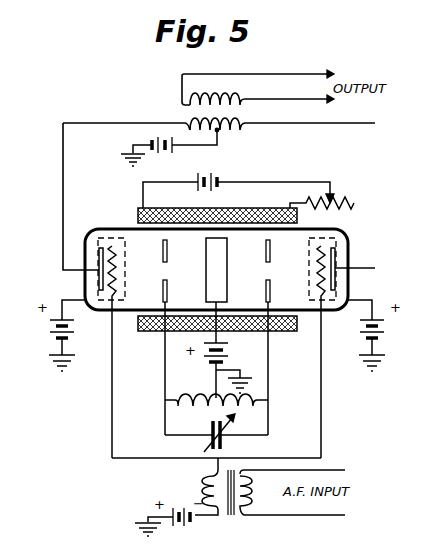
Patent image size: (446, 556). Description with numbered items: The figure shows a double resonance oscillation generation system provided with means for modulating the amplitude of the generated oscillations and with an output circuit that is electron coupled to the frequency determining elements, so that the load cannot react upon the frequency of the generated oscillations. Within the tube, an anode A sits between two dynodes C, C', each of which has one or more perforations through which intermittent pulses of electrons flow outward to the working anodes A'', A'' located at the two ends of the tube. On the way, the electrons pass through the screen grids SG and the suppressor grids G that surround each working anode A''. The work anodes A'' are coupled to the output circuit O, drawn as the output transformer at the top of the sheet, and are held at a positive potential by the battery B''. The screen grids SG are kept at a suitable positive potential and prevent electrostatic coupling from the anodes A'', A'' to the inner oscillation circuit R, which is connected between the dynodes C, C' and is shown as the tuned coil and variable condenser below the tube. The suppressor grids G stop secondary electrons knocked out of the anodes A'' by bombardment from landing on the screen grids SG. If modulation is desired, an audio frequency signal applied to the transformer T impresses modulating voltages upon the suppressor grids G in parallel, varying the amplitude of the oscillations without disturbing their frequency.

The output circuit O is at (197, 93).
The battery B'' is at (156, 147).
The screen grids SG is at (114, 238).
The working anodes A'' is at (213, 268).
The dynode C is at (174, 337).
The dynode C' is at (280, 337).
The anode A is at (226, 290).
The suppressor grids G is at (113, 286).
The inner oscillation circuit R is at (248, 418).
The transformer T is at (270, 498).